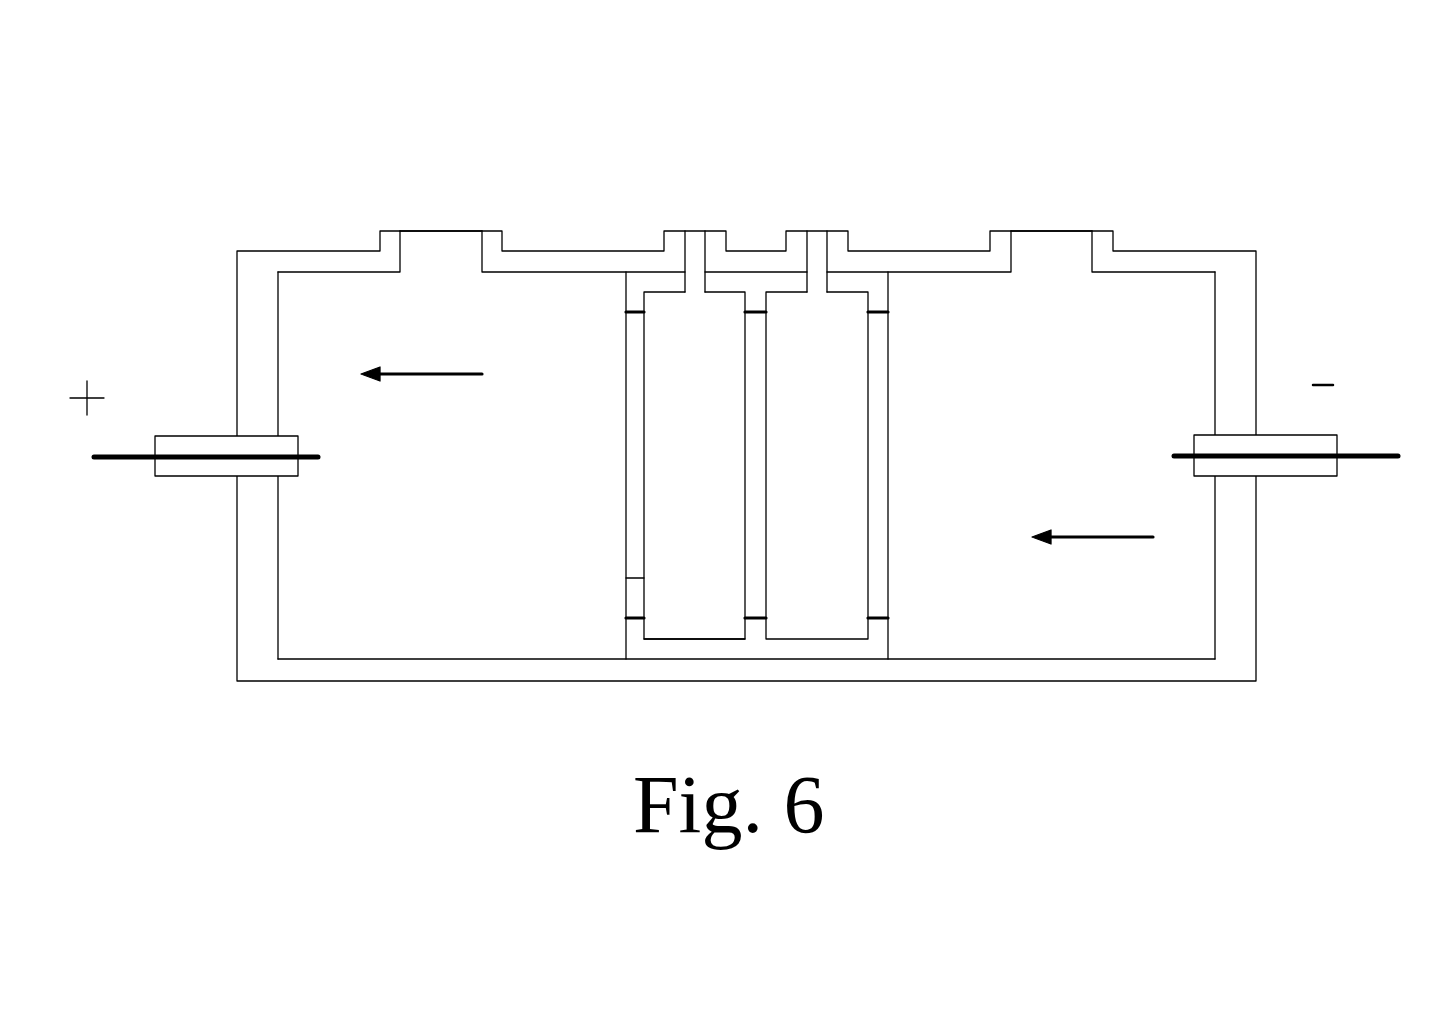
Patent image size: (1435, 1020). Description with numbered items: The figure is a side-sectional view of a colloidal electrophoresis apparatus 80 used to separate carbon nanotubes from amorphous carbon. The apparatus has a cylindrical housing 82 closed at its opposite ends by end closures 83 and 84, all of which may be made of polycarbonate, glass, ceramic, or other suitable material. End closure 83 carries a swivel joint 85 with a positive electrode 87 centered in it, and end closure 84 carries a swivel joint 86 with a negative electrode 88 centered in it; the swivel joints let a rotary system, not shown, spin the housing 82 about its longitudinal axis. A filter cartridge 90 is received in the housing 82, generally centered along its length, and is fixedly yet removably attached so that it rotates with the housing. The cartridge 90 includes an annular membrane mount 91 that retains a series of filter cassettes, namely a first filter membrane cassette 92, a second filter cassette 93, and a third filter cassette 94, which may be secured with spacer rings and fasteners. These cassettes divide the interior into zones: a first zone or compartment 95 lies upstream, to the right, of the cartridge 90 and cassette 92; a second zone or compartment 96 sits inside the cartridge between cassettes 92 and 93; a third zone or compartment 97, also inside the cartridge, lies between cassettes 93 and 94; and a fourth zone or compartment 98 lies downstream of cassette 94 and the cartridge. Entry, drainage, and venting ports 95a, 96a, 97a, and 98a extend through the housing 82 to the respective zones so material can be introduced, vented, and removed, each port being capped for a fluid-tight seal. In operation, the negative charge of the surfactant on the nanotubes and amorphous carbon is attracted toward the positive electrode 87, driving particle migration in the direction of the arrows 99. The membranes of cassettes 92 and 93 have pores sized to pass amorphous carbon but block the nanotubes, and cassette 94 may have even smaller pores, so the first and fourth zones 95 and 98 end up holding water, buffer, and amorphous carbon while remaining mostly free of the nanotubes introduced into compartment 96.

The colloidal electrophoresis apparatus 80 is at (1193, 149).
The cylindrical housing 82 is at (299, 250).
The end closure 83 is at (258, 331).
The end closure 84 is at (1237, 291).
The swivel joint 85 is at (187, 477).
The swivel joint 86 is at (1323, 477).
The positive electrode 87 is at (218, 477).
The negative electrode 88 is at (1282, 458).
The filter cartridge 90 is at (603, 475).
The annular membrane mount 91 is at (645, 641).
The filter membrane cassette 92 is at (888, 556).
The filter cassette 93 is at (745, 352).
The filter cassette 94 is at (626, 578).
The first zone or compartment 95 is at (986, 413).
The first entry/drainage/venting port 95a is at (1052, 231).
The second zone or compartment 96 is at (803, 494).
The second entry/drainage/venting port 96a is at (811, 231).
The third zone or compartment 97 is at (681, 476).
The third entry/drainage/venting port 97a is at (699, 231).
The fourth zone or compartment 98 is at (416, 578).
The fourth entry/drainage/venting port 98a is at (446, 231).
The arrows 99 is at (425, 372).